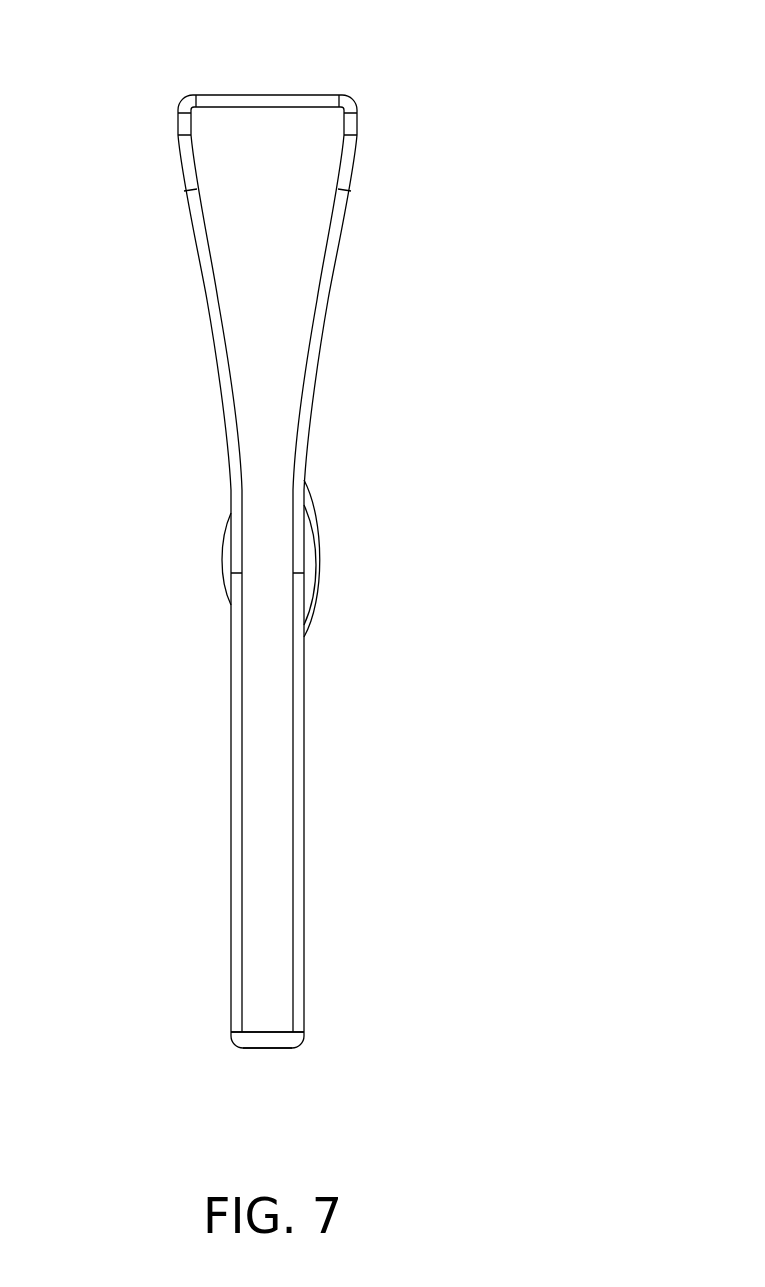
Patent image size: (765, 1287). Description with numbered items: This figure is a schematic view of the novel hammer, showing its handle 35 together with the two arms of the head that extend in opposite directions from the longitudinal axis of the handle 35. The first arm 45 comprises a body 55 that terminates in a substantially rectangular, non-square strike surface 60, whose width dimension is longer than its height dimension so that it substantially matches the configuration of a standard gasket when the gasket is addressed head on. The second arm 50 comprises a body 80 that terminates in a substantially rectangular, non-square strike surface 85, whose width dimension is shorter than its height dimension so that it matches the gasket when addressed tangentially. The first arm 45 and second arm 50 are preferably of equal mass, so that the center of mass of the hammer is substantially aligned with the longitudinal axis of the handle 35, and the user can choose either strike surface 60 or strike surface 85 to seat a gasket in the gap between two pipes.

The handle 35 is at (334, 497).
The first arm 45 is at (145, 172).
The second arm 50 is at (197, 957).
The body 55 is at (343, 295).
The substantially rectangular, non-square strike surface 60 is at (282, 80).
The body 80 is at (324, 849).
The substantially rectangular, non-square strike surface 85 is at (282, 1062).